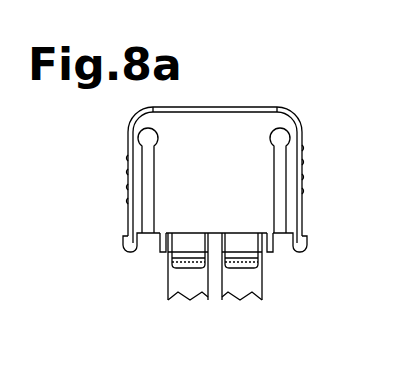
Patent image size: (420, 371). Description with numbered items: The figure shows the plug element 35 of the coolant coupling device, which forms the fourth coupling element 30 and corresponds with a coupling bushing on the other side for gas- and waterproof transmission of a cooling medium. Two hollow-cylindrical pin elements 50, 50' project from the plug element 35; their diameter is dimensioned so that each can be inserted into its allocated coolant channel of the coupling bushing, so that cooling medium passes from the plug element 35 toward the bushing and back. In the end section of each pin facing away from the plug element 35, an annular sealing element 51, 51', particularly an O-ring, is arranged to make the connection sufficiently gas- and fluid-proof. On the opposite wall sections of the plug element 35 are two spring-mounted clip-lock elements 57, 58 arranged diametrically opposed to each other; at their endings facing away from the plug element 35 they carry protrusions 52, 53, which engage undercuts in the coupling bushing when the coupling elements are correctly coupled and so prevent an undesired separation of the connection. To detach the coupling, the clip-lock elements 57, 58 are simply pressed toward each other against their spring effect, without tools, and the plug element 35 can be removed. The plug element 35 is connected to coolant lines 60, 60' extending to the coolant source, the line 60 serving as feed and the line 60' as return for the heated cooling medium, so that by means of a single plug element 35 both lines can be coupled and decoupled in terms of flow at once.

The fourth coupling element 30 is at (275, 88).
The plug element 35 is at (213, 127).
The hollow-cylindrical pin element 50 is at (136, 273).
The hollow-cylindrical pin element 50' is at (295, 266).
The annular sealing element 51 is at (157, 280).
The annular sealing element 51' is at (291, 274).
The protrusion 52 is at (126, 242).
The protrusion 53 is at (306, 238).
The clip-lock element 57 is at (128, 172).
The clip-lock element 58 is at (302, 172).
The coolant line 60 is at (160, 331).
The coolant line 60' is at (275, 331).